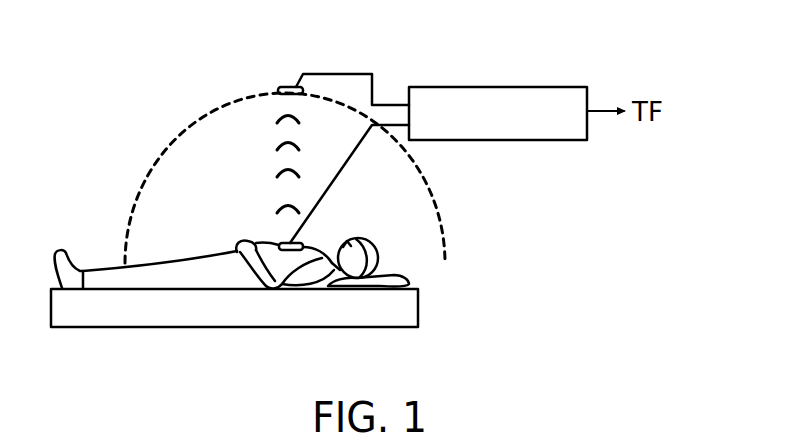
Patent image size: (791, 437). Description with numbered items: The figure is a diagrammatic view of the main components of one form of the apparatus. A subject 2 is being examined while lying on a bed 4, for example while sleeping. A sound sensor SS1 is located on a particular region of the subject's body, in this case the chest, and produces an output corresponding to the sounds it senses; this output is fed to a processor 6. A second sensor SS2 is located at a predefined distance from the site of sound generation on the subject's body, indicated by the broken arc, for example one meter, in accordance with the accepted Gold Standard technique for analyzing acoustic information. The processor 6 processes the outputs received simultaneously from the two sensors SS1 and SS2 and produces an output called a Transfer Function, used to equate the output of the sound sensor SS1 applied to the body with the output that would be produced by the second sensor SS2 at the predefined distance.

The subject 2 is at (383, 249).
The bed 4 is at (400, 327).
The processor 6 is at (510, 87).
The sound sensor SS1 is at (283, 242).
The second sensor SS2 is at (283, 88).